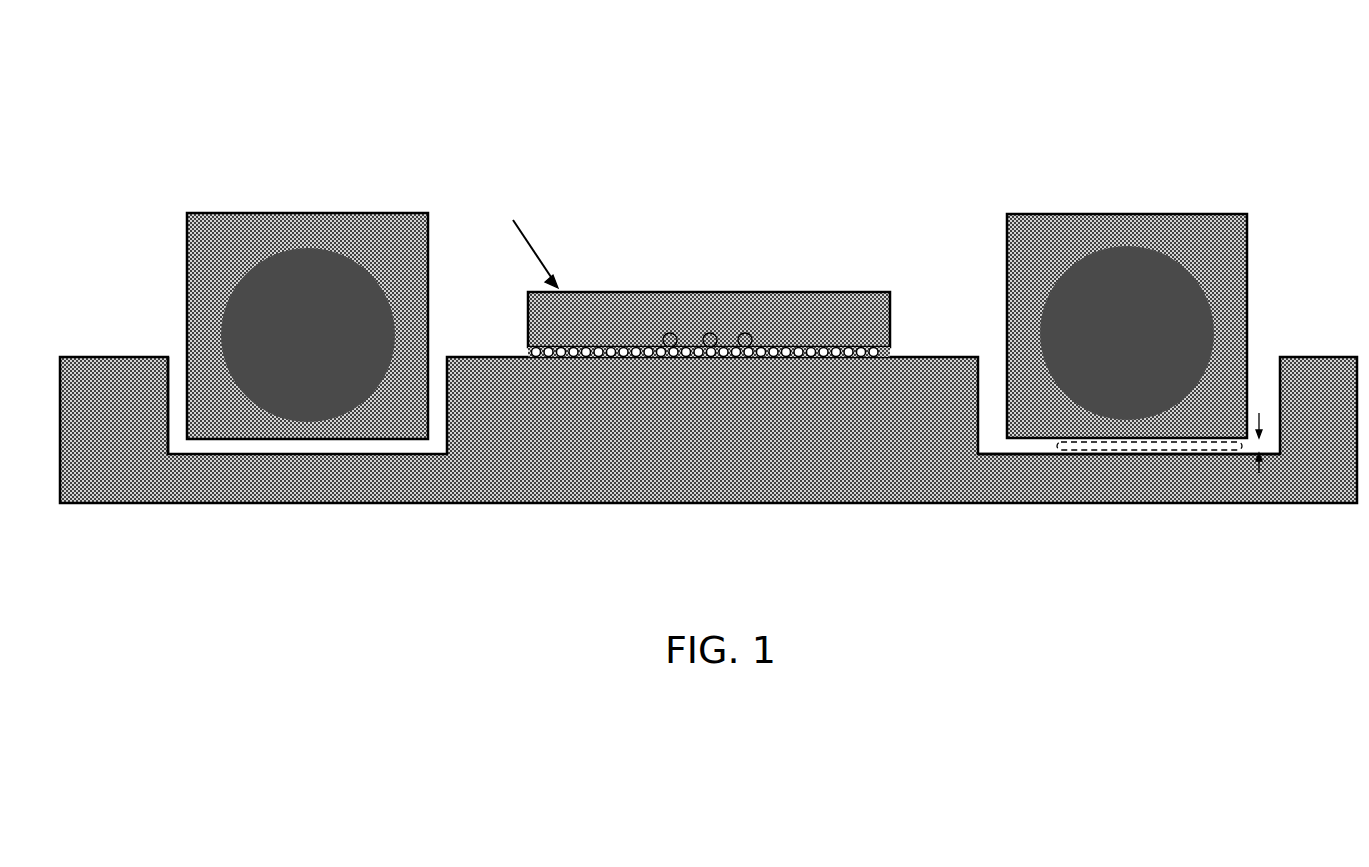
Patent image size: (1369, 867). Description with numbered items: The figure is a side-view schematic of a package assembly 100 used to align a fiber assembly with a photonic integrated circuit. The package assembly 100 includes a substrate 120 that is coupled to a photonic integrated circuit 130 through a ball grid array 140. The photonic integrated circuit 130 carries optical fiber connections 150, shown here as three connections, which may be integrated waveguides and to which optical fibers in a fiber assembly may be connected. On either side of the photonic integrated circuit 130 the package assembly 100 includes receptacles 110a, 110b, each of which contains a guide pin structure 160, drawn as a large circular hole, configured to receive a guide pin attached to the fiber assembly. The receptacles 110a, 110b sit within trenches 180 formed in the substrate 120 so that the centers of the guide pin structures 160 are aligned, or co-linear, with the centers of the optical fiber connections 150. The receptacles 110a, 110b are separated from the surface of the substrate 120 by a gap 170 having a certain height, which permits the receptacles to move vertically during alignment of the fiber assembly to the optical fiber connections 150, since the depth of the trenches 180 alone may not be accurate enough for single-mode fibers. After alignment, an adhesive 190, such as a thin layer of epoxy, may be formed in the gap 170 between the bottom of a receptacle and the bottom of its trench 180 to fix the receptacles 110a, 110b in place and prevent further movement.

The package assembly 100 is at (732, 107).
The receptacle 110a is at (337, 213).
The receptacle 110b is at (1139, 289).
The substrate 120 is at (792, 492).
The PIC 130 is at (725, 292).
The ball grid array 140 is at (885, 353).
The optical fiber connections 150 is at (708, 336).
The guide pin structure 160 is at (1103, 295).
The gap 170 is at (1033, 447).
The trenches 180 is at (180, 402).
The adhesive 190 is at (1157, 446).